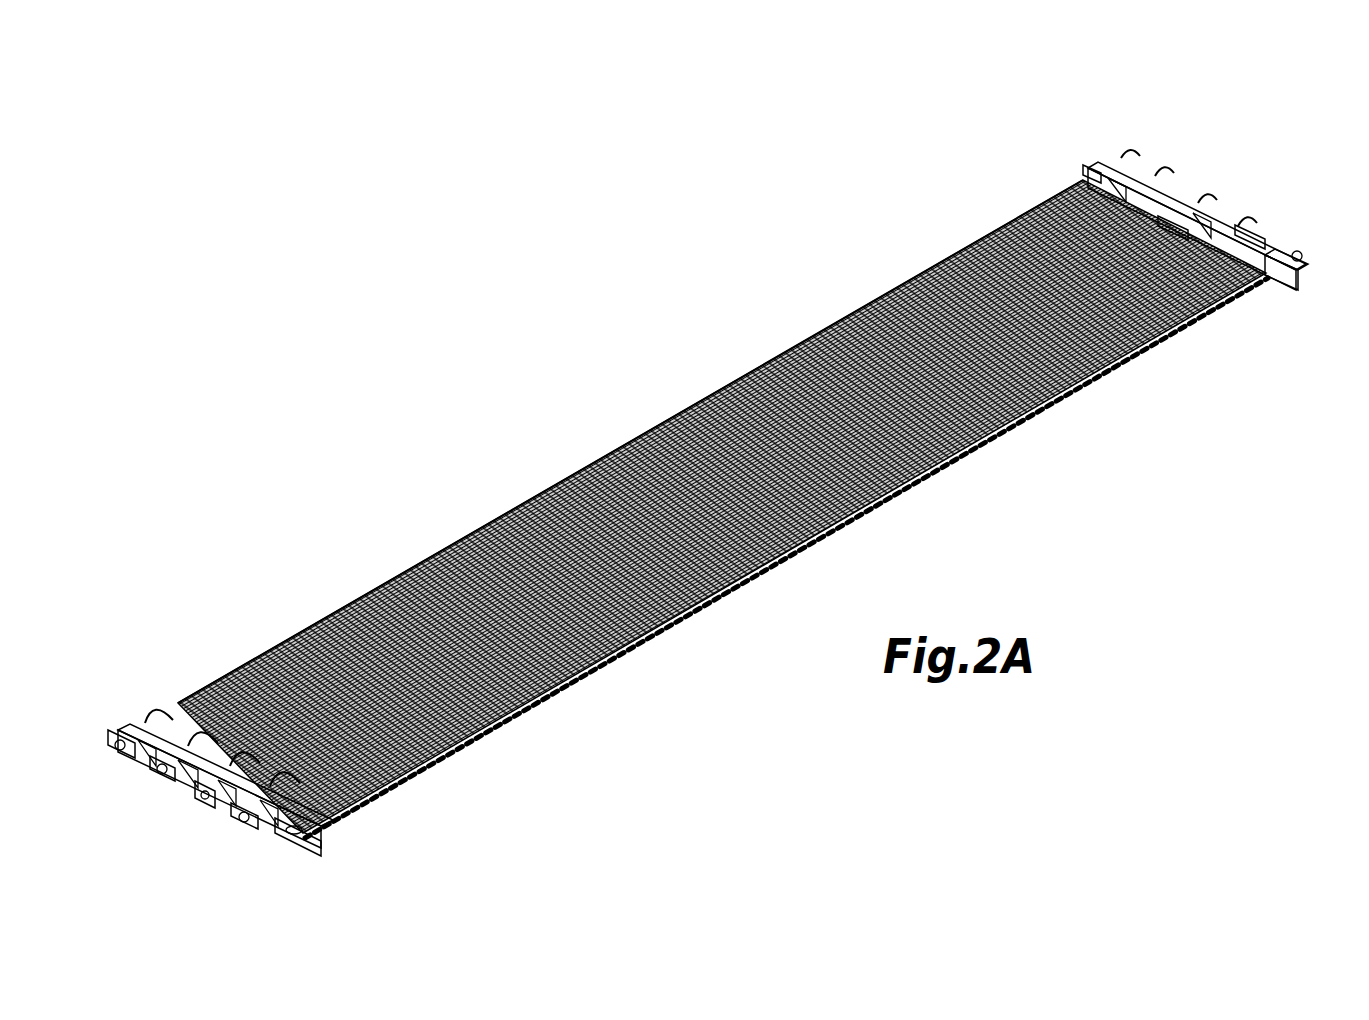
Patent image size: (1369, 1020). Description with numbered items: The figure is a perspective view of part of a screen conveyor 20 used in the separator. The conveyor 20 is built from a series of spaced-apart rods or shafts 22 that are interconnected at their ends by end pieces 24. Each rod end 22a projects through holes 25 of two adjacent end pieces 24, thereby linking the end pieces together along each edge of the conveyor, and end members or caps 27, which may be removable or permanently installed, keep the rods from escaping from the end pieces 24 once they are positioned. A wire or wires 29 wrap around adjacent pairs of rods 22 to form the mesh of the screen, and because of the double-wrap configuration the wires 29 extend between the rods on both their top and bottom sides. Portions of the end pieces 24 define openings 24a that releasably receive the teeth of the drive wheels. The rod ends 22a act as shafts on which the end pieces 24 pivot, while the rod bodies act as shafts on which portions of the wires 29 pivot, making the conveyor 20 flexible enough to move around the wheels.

The conveyor 20 is at (460, 520).
The rods or shafts 22 is at (957, 248).
The rod ends 22a is at (148, 717).
The end pieces 24 is at (303, 827).
The openings 24a is at (118, 746).
The holes 25 is at (263, 827).
The end members or caps 27 is at (190, 795).
The wire or wires 29 is at (780, 343).